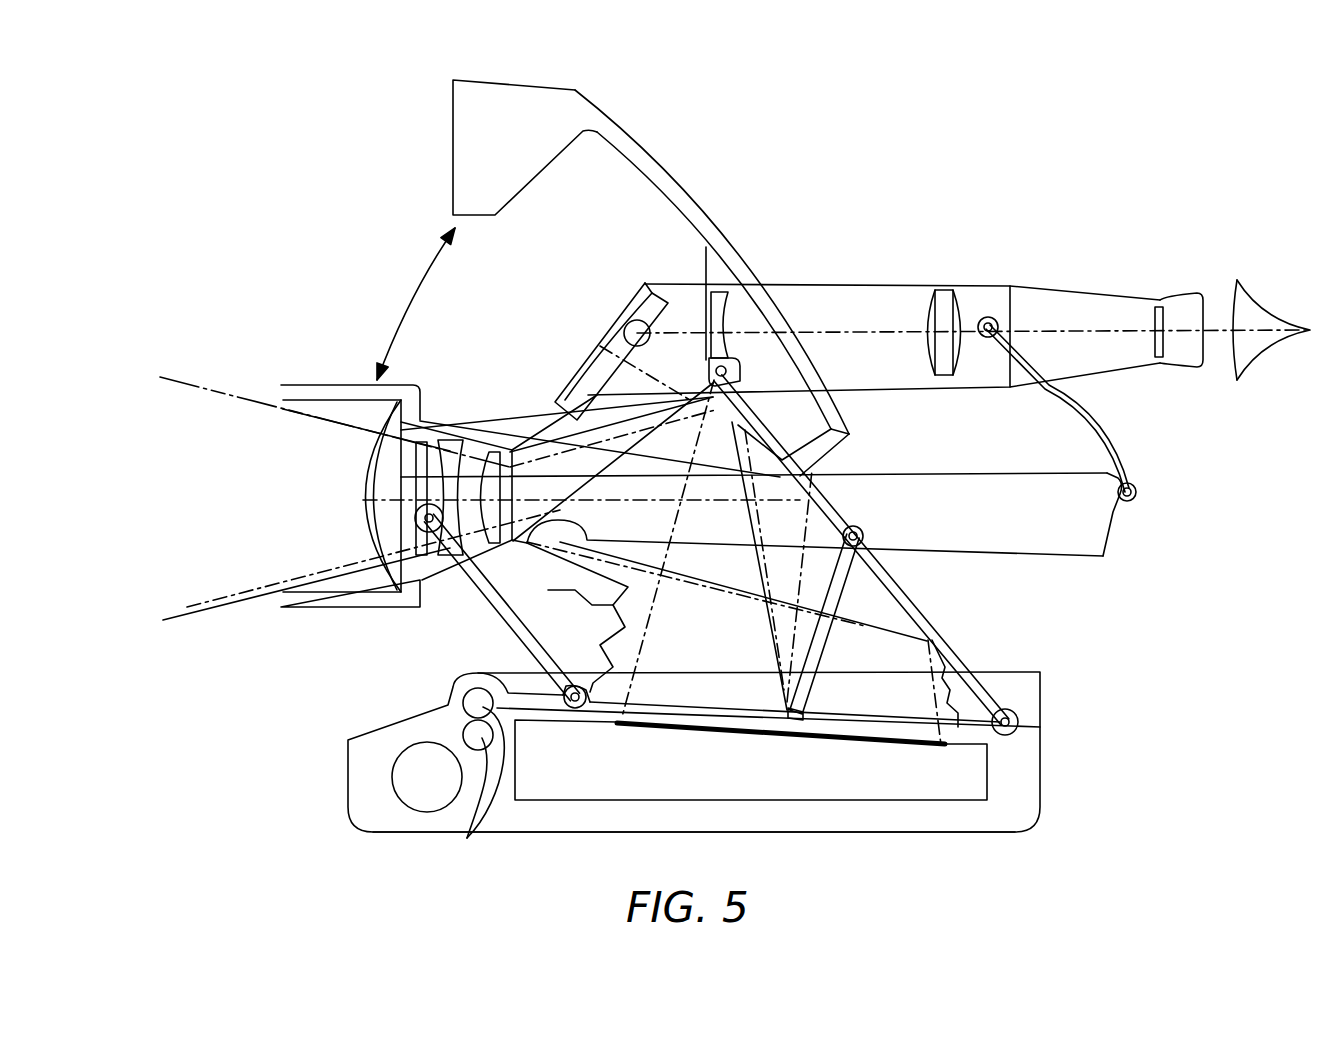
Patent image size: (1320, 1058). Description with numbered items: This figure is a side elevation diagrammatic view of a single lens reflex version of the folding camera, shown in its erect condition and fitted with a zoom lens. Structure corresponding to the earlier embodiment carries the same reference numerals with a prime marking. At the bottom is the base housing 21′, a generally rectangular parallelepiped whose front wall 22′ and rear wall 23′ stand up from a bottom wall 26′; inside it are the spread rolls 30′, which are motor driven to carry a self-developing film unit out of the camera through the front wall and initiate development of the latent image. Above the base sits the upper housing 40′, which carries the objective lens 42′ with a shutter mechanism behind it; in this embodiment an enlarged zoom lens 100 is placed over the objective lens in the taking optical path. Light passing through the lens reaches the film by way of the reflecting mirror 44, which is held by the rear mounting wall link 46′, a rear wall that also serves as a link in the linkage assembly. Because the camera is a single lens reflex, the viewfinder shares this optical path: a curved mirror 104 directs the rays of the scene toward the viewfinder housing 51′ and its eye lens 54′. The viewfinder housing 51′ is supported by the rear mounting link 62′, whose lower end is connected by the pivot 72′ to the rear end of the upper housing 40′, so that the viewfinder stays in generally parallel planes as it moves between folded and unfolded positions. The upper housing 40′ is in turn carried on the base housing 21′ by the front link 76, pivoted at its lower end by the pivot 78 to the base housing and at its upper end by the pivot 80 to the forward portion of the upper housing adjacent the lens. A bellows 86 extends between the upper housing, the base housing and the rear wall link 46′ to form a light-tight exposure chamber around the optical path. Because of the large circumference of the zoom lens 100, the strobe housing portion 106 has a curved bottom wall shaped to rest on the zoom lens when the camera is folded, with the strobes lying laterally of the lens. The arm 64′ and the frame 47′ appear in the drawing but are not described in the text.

The zoom lens 100 is at (297, 384).
The objective lens 42′ is at (423, 445).
The pivot 80 is at (423, 582).
The front link 76 is at (510, 605).
The pivot 78 is at (577, 708).
The bellows 86 is at (578, 591).
The upper housing 40′ is at (968, 478).
The viewfinder housing 51′ is at (950, 289).
The eye lens 54′ is at (1163, 320).
The rear mounting link 62′ is at (1170, 402).
The pivot 72′ is at (1137, 494).
The strobe housing portion 106 is at (530, 168).
The arm 64′ is at (758, 147).
The frame 47′ is at (833, 432).
The curved mirror 104 is at (625, 338).
The reflecting mirror 44 is at (832, 504).
The rear mounting wall link 46′ is at (950, 647).
The base housing 21′ is at (1047, 670).
The front wall 22′ is at (347, 774).
The spread rolls 30′ is at (467, 838).
The rear wall 23′ is at (1040, 777).
The bottom wall 26′ is at (830, 835).